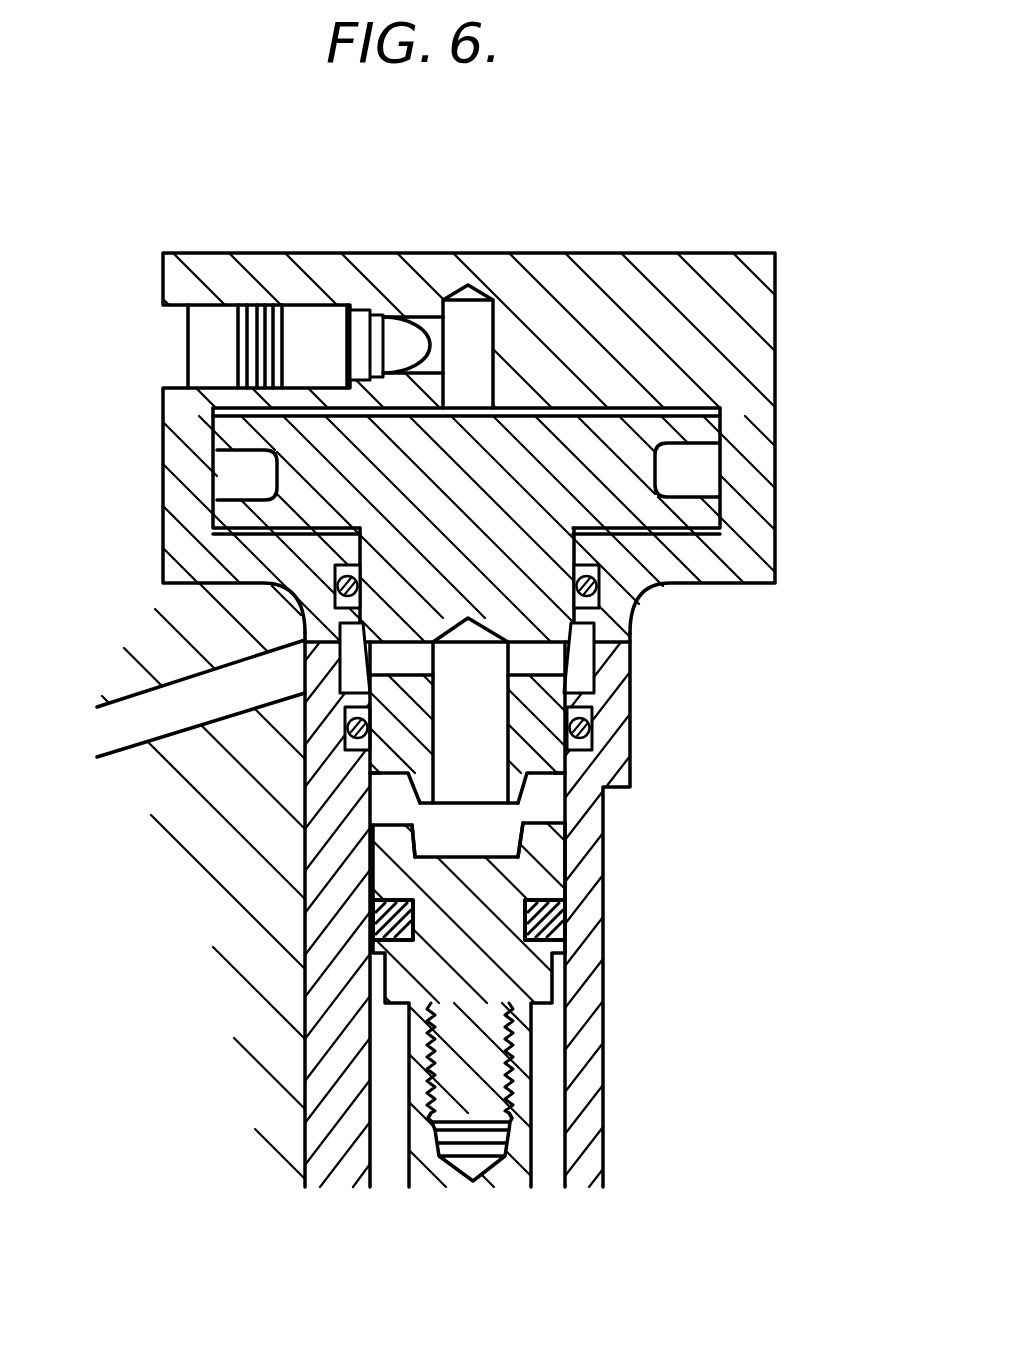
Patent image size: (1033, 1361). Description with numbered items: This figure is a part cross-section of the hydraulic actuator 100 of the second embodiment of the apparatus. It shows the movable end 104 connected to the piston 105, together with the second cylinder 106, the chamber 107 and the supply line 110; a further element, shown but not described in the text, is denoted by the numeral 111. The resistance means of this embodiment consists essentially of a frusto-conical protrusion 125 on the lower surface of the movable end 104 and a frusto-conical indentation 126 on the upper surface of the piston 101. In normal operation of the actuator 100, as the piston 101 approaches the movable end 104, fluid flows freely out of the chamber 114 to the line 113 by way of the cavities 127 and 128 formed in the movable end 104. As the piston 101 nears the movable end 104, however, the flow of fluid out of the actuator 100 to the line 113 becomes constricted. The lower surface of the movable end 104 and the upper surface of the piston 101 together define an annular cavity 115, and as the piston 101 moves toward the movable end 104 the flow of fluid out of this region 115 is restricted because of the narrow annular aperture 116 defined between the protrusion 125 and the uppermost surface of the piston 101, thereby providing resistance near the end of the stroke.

The actuator 100 is at (608, 1020).
The piston 101 is at (533, 988).
The movable end 104 is at (540, 726).
The piston 105 is at (703, 511).
The second cylinder 106 is at (747, 444).
The chamber 107 is at (683, 413).
The supply line 110 is at (483, 312).
The adjusting plug 111 is at (297, 317).
The line 113 is at (130, 693).
The chamber 114 is at (458, 833).
The annular cavity 115 is at (547, 803).
The annular aperture 116 is at (522, 817).
The frusto-conical protrusion 125 is at (530, 788).
The frusto-conical indentation 126 is at (567, 863).
The cavity 127 is at (413, 650).
The cavity 128 is at (490, 698).